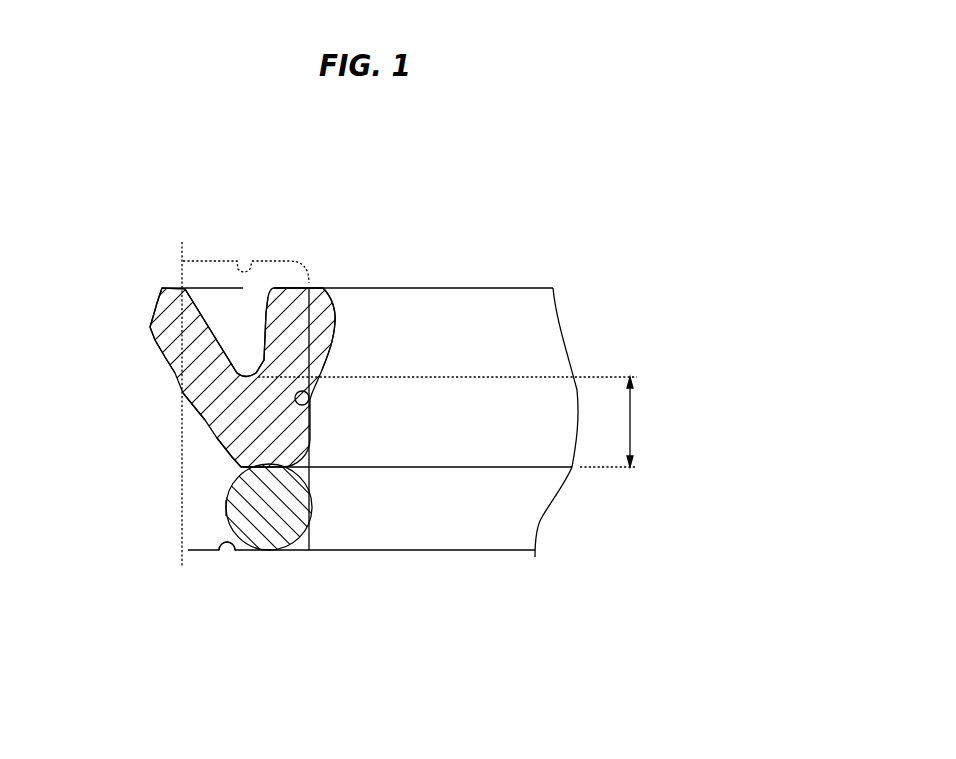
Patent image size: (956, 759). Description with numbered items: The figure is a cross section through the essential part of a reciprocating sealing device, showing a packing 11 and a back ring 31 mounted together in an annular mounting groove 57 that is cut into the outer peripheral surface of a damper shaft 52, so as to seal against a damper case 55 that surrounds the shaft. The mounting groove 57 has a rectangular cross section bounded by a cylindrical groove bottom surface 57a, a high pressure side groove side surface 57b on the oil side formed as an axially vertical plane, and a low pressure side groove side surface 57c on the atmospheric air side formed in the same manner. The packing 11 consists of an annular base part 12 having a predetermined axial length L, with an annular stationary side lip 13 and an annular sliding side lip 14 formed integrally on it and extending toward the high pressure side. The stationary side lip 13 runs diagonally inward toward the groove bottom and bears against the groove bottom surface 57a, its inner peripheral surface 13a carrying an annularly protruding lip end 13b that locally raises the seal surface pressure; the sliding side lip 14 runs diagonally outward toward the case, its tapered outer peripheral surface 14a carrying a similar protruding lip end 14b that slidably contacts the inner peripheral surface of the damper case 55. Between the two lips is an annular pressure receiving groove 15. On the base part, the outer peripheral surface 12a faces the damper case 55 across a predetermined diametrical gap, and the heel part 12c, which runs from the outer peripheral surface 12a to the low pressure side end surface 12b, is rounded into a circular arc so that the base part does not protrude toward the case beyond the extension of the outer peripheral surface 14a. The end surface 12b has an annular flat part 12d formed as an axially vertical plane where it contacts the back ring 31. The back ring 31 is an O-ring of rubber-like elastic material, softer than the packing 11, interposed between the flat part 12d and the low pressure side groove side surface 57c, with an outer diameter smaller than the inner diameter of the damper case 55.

The packing 11 is at (510, 288).
The annular base part 12 is at (273, 417).
The outer peripheral surface 12a is at (197, 422).
The end surface 12b is at (231, 487).
The heel part 12c is at (224, 451).
The flat part 12d is at (228, 510).
The stationary side lip 13 is at (307, 280).
The inner peripheral surface 13a is at (333, 358).
The lip end 13b is at (340, 325).
The sliding side lip 14 is at (170, 281).
The outer peripheral surface 14a is at (170, 360).
The lip end 14b is at (152, 318).
The pressure receiving groove 15 is at (231, 318).
The back ring 31 is at (275, 550).
The damper shaft 52 is at (312, 522).
The damper case 55 is at (170, 560).
The mounting groove 57 is at (267, 277).
The groove bottom surface 57a is at (310, 397).
The high pressure side groove side surface 57b is at (242, 258).
The low pressure side groove side surface 57c is at (222, 558).
The axial length L is at (457, 422).